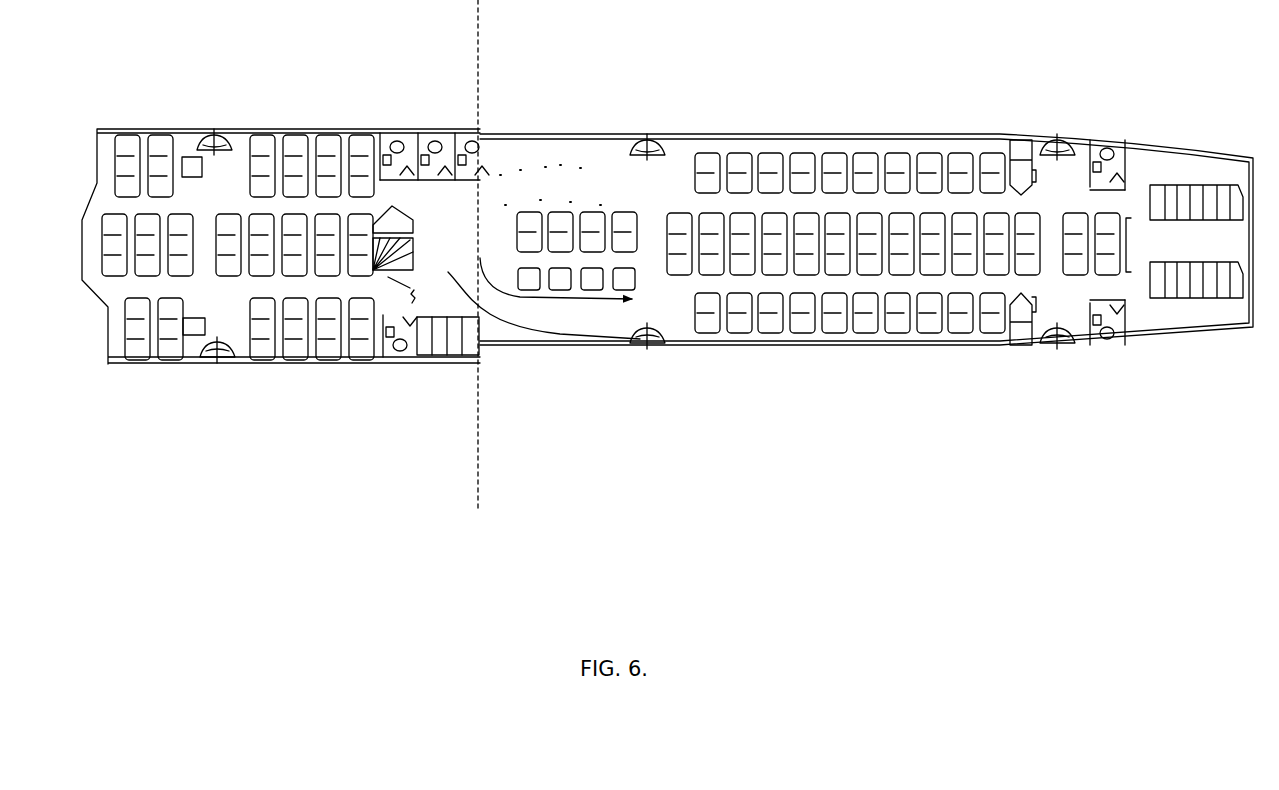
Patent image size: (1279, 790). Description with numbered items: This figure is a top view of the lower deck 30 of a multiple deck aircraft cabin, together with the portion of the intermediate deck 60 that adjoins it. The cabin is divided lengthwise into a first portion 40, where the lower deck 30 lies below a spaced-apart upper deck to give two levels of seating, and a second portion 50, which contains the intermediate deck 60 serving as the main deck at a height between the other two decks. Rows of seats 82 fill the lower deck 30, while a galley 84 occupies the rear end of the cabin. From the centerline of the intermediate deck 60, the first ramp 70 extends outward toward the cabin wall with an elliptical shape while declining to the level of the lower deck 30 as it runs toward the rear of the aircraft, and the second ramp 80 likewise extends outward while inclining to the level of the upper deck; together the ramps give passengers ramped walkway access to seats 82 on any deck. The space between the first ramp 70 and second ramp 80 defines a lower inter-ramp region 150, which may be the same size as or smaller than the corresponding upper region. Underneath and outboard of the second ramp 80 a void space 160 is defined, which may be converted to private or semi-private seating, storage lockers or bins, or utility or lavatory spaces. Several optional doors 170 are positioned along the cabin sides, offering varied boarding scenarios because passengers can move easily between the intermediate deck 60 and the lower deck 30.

The first portion 40 is at (578, 52).
The second portion 50 is at (385, 80).
The intermediate deck 60 is at (200, 198).
The first ramp 70 is at (517, 315).
The second ramp 80 is at (486, 200).
The seats 82 is at (832, 158).
The galley 84 is at (1210, 236).
The lower deck 30 is at (1027, 242).
The lower inter-ramp region 150 is at (560, 268).
The void space 160 is at (570, 155).
The doors 170 is at (655, 140).